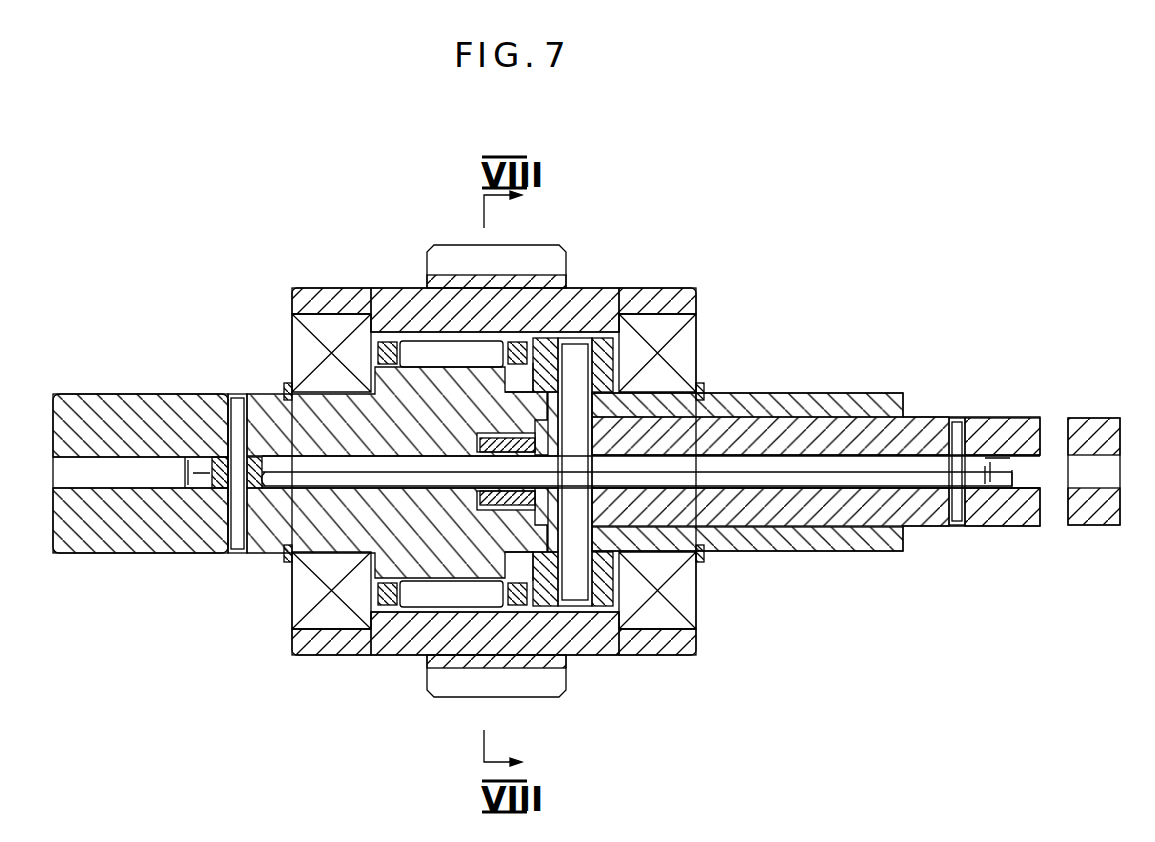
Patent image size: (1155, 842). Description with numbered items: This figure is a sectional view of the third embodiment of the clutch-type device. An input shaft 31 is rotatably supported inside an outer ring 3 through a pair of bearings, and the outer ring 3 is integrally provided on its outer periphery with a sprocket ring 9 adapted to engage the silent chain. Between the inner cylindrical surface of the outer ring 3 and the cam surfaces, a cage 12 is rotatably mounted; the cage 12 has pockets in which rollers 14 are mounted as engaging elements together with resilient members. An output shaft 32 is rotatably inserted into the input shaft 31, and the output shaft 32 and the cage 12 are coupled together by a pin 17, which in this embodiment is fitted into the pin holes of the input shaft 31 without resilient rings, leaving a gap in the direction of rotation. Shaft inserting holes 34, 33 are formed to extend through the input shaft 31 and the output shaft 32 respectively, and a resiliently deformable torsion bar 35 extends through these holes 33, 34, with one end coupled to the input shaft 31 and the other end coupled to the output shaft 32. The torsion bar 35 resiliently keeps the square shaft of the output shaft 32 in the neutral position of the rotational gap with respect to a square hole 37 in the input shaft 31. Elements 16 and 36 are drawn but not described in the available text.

The outer ring 3 is at (598, 302).
The sprocket ring 9 is at (548, 265).
The cage 12 is at (385, 343).
The rollers 14 is at (426, 352).
The disc 16 is at (598, 412).
The pin 17 is at (575, 375).
The input shaft 31 is at (142, 424).
The output shaft 32 is at (845, 435).
The shaft inserting hole 33 is at (850, 484).
The shaft inserting hole 34 is at (318, 483).
The torsion bar 35 is at (748, 468).
The retaining member 36 is at (518, 497).
The square hole 37 is at (497, 500).